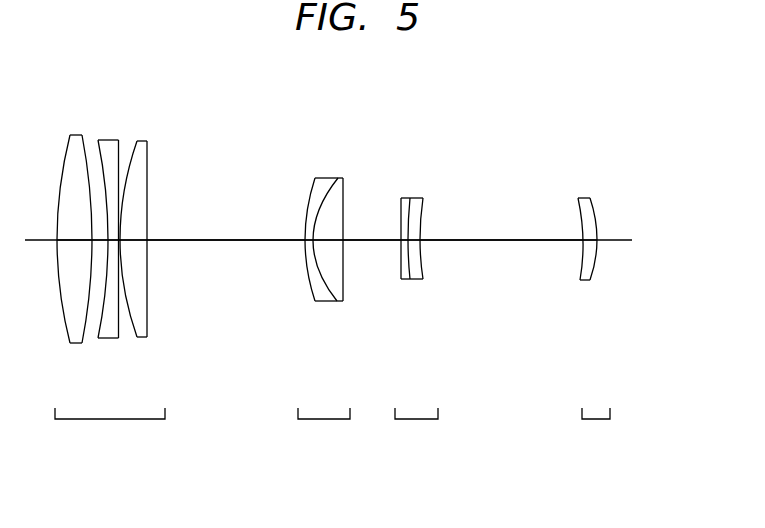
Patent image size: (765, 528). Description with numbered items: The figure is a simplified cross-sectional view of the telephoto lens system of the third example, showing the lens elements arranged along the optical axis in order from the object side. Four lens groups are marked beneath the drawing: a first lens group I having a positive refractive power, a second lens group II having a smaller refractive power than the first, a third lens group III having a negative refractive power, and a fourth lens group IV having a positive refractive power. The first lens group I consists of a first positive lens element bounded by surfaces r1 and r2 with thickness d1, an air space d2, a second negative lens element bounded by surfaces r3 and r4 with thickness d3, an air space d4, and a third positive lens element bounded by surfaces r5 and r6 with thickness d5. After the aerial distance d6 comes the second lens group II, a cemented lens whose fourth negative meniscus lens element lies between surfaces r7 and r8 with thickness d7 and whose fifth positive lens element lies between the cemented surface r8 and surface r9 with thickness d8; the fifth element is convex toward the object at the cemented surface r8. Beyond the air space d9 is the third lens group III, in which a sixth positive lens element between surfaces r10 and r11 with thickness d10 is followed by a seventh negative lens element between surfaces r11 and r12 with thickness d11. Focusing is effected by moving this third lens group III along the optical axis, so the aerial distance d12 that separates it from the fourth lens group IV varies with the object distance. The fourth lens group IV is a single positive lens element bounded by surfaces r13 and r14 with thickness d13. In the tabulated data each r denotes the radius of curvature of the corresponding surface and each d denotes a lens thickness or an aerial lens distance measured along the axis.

The first lens group I is at (110, 261).
The second lens group II is at (321, 286).
The third lens group III is at (424, 288).
The fourth lens group IV is at (597, 296).
The radius of curvature of first lens surface r1 is at (67, 148).
The radius of curvature of second lens surface r2 is at (83, 146).
The radius of curvature of third lens surface r3 is at (93, 150).
The radius of curvature of fourth lens surface r4 is at (122, 147).
The radius of curvature of fifth lens surface r5 is at (130, 150).
The radius of curvature of sixth lens surface r6 is at (147, 148).
The radius of curvature of seventh lens surface r7 is at (310, 190).
The radius of curvature of eighth lens surface r8 is at (324, 188).
The radius of curvature of ninth lens surface r9 is at (347, 189).
The radius of curvature of tenth lens surface r10 is at (399, 210).
The radius of curvature of eleventh lens surface r11 is at (408, 203).
The radius of curvature of twelfth lens surface r12 is at (423, 212).
The radius of curvature of thirteenth lens surface r13 is at (578, 208).
The radius of curvature of fourteenth lens surface r14 is at (593, 208).
The lens thickness d1 is at (72, 243).
The aerial lens distance d2 is at (100, 242).
The lens thickness d3 is at (110, 245).
The aerial lens distance d4 is at (121, 247).
The lens thickness d5 is at (121, 247).
The aerial lens distance d6 is at (233, 244).
The lens thickness d7 is at (311, 246).
The lens thickness d8 is at (331, 243).
The aerial lens distance d9 is at (374, 242).
The lens thickness d10 is at (403, 278).
The lens thickness d11 is at (419, 279).
The aerial lens distance d12 is at (508, 240).
The lens thickness d13 is at (583, 256).